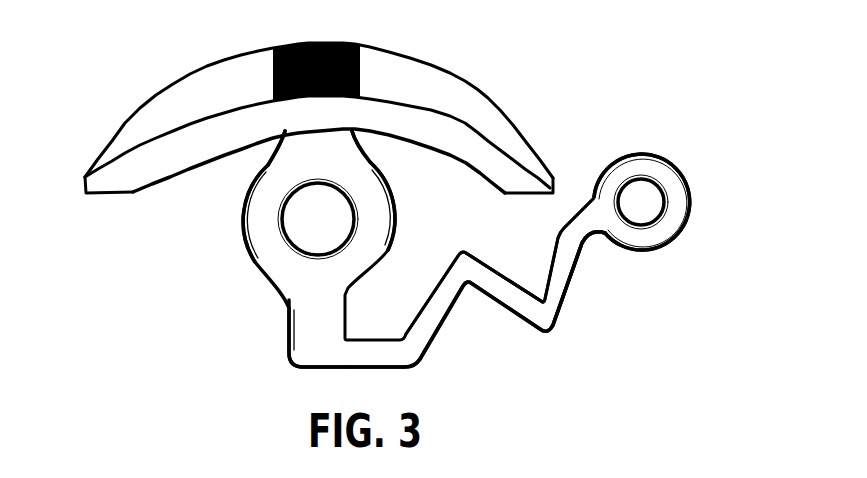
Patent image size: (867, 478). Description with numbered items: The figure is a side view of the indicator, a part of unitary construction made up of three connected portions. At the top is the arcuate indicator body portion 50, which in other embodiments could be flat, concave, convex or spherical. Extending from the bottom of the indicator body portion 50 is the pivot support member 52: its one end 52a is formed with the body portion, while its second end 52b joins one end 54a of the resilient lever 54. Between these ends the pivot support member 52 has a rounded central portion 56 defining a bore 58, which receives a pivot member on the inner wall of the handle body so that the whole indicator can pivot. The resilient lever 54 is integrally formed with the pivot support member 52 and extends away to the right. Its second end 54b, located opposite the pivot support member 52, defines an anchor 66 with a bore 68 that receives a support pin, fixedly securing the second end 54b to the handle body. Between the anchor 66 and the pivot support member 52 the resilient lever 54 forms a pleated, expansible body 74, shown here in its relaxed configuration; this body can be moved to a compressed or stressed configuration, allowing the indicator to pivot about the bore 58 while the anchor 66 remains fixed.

The indicator body portion 50 is at (452, 88).
The pivot support member 52 is at (240, 238).
The one end 52a is at (333, 145).
The second end 52b is at (310, 318).
The resilient lever 54 is at (576, 304).
The one end 54a is at (417, 352).
The second end 54b is at (587, 232).
The central portion 56 is at (378, 208).
The bore 58 is at (290, 214).
The anchor 66 is at (673, 198).
The bore 68 is at (657, 192).
The expansible body 74 is at (497, 285).